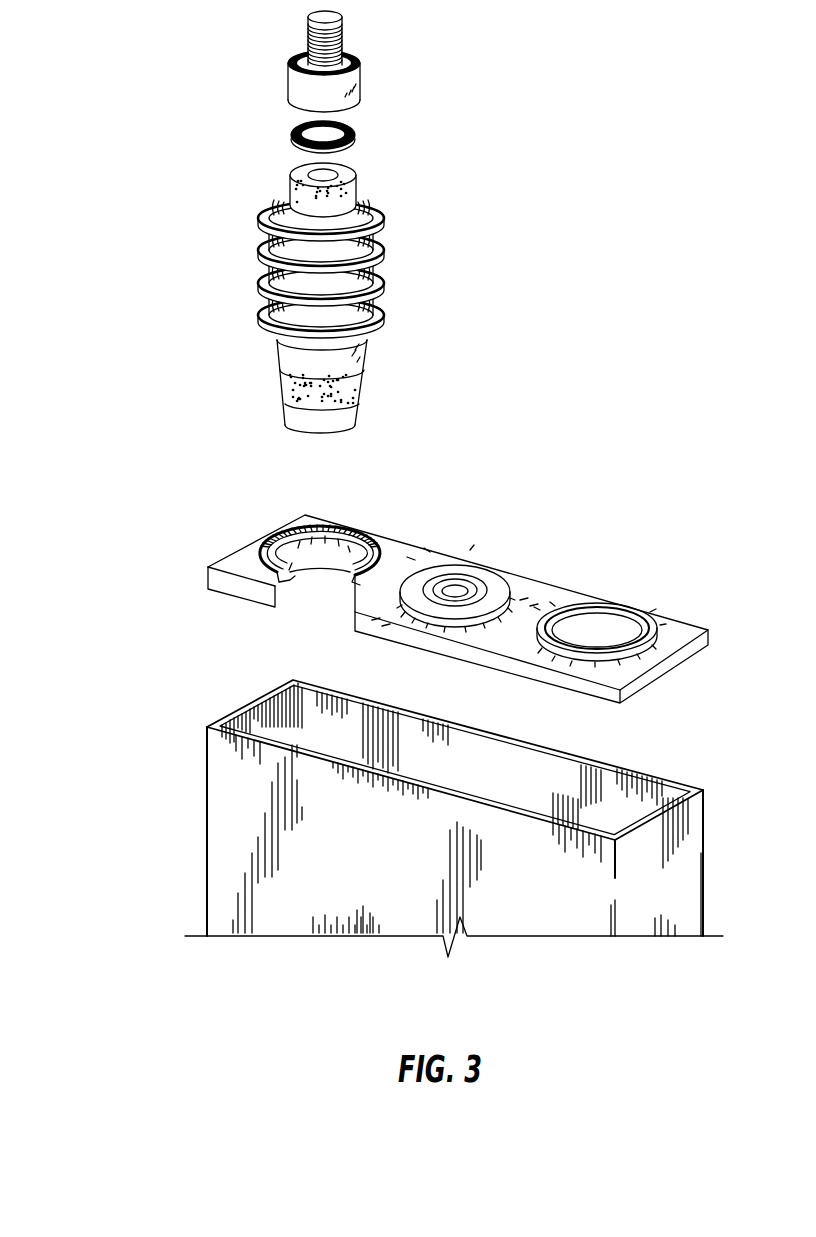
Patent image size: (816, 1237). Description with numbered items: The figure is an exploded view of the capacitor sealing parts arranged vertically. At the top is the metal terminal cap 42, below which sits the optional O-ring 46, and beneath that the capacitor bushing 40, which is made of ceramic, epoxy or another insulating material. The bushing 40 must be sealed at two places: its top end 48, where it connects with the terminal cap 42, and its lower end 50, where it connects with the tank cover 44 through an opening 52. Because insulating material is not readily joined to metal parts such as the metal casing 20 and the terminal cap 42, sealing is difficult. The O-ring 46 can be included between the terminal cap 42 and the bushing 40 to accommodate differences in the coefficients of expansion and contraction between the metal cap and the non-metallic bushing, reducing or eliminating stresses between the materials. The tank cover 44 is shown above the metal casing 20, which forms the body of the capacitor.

The metal casing 20 is at (230, 805).
The capacitor bushing 40 is at (388, 291).
The terminal cap 42 is at (360, 78).
The tank cover 44 is at (685, 632).
The O-ring 46 is at (353, 133).
The top end 48 is at (355, 185).
The lower end 50 is at (364, 388).
The opening 52 is at (352, 540).